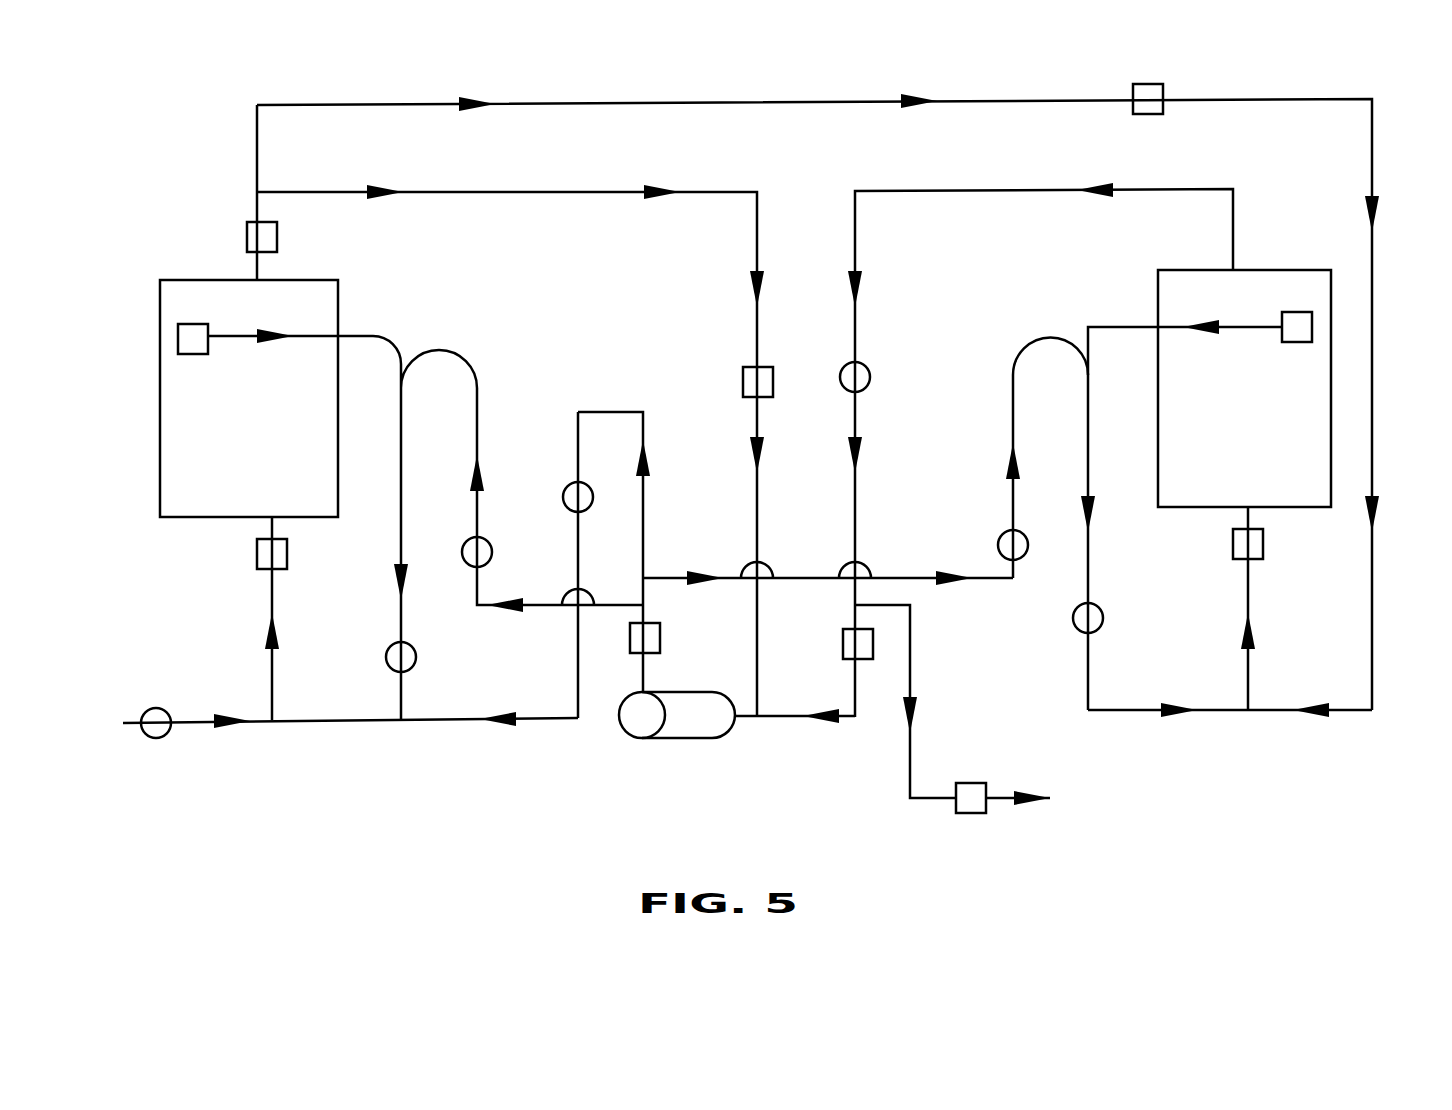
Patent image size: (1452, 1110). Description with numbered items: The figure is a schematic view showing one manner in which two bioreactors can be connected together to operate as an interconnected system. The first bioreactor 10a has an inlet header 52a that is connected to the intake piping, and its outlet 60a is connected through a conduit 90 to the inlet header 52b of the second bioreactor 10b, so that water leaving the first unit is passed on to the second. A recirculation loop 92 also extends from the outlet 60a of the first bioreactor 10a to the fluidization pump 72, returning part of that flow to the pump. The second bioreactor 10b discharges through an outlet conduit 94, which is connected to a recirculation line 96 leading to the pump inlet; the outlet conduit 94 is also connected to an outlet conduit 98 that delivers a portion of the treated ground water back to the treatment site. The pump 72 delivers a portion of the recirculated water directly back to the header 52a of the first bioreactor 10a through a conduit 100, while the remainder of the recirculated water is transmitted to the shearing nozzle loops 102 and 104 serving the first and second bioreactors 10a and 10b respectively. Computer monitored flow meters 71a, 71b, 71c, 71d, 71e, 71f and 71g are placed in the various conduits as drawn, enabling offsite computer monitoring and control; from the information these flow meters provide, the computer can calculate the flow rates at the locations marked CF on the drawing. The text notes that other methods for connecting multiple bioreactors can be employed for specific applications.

The conduit 90 is at (578, 104).
The recirculation loop 92 is at (703, 191).
The outlet conduit 94 is at (990, 195).
The outlet 60a is at (257, 211).
The bioreactor 10a is at (338, 313).
The bioreactor 10b is at (1331, 365).
The shearing nozzle loop 102 is at (478, 412).
The shearing nozzle loop 104 is at (1013, 428).
The inlet header 52a is at (272, 515).
The inlet header 52b is at (1248, 505).
The computer monitored flow meter 71a is at (162, 740).
The computer monitored flow meter 71b is at (416, 657).
The computer monitored flow meter 71c is at (468, 565).
The computer monitored flow meter 71d is at (563, 494).
The computer monitored flow meter 71e is at (870, 370).
The computer monitored flow meter 71f is at (998, 541).
The computer monitored flow meter 71g is at (1073, 615).
The fluidization pump 72 is at (679, 738).
The recirculation line 96 is at (768, 717).
The outlet conduit 98 is at (910, 765).
The conduit 100 is at (440, 719).